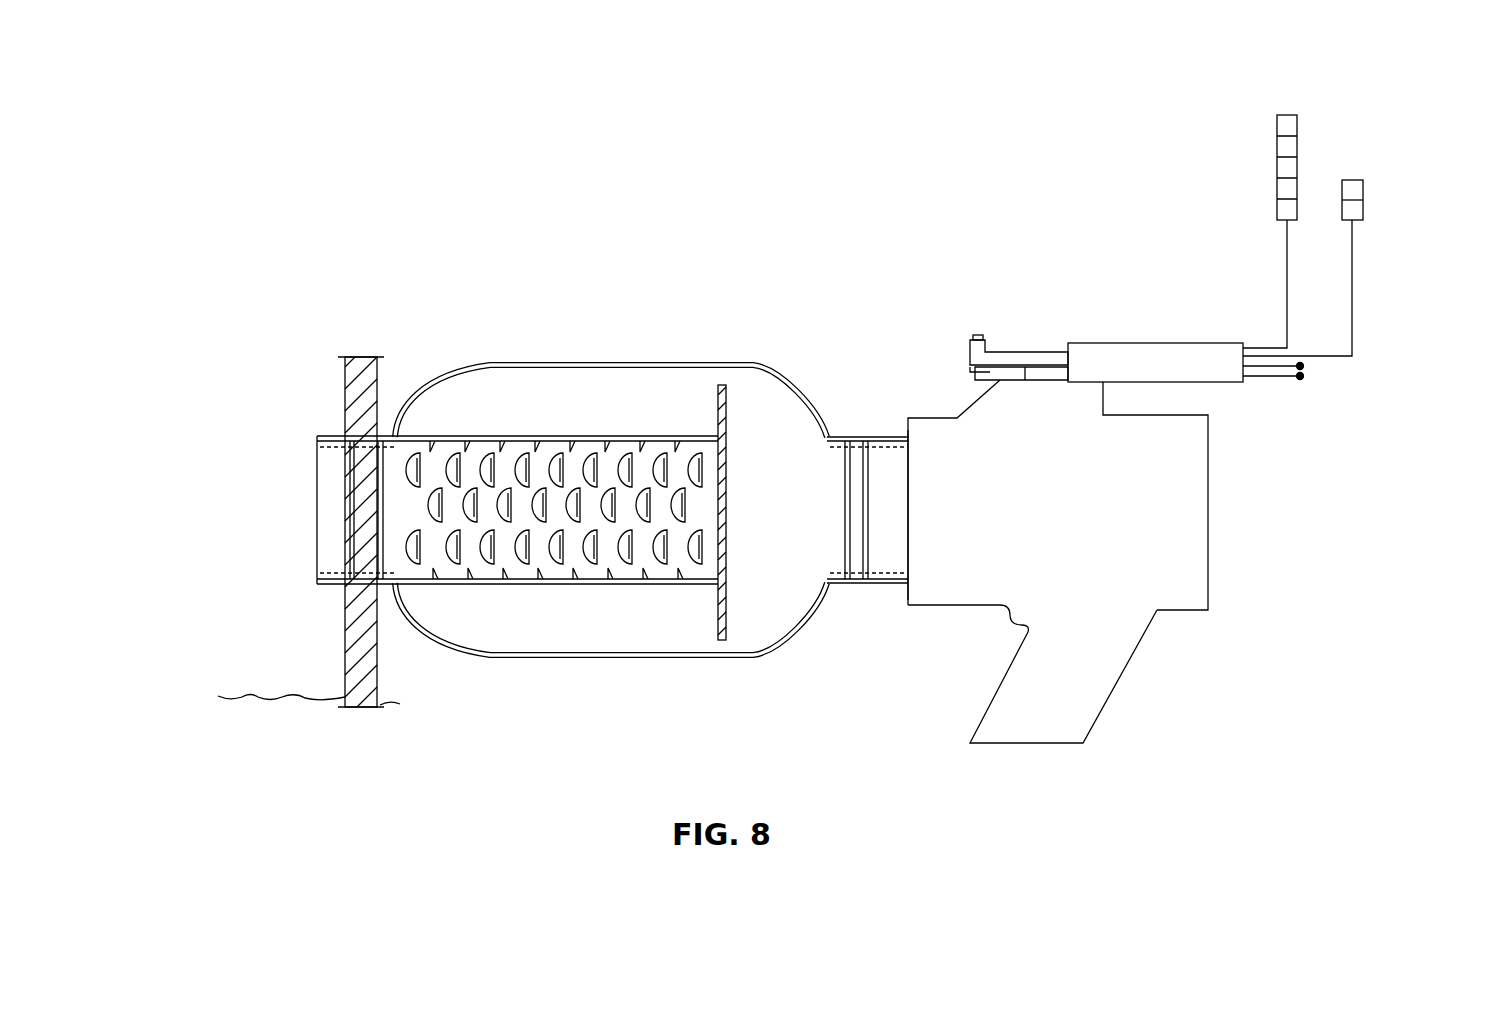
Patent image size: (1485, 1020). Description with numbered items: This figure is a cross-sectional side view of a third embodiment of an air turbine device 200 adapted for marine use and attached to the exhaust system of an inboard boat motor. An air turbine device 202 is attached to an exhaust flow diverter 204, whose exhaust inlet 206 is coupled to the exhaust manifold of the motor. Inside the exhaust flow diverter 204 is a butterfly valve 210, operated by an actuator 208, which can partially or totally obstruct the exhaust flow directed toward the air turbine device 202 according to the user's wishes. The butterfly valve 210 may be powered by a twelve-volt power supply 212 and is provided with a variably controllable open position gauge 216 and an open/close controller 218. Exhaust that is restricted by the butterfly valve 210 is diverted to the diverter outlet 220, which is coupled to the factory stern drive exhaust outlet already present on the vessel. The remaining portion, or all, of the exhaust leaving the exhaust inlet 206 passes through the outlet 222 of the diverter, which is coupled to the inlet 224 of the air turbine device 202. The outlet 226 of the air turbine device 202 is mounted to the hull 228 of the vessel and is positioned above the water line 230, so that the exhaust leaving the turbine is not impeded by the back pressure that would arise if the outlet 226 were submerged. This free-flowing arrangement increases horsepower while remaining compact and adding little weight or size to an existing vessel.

The air turbine device 200 is at (822, 242).
The air turbine device 202 is at (463, 655).
The exhaust flow diverter 204 is at (965, 605).
The exhaust inlet 206 is at (1210, 535).
The actuator 208 is at (1160, 343).
The butterfly valve 210 is at (1000, 370).
The power supply 212 is at (1300, 400).
The open position gauge 216 is at (1287, 115).
The open/close controller 218 is at (1352, 180).
The diverter outlet 220 is at (1100, 718).
The outlet 222 is at (910, 512).
The inlet 224 is at (892, 585).
The outlet 226 is at (332, 585).
The hull 228 is at (380, 375).
The water line 230 is at (280, 697).